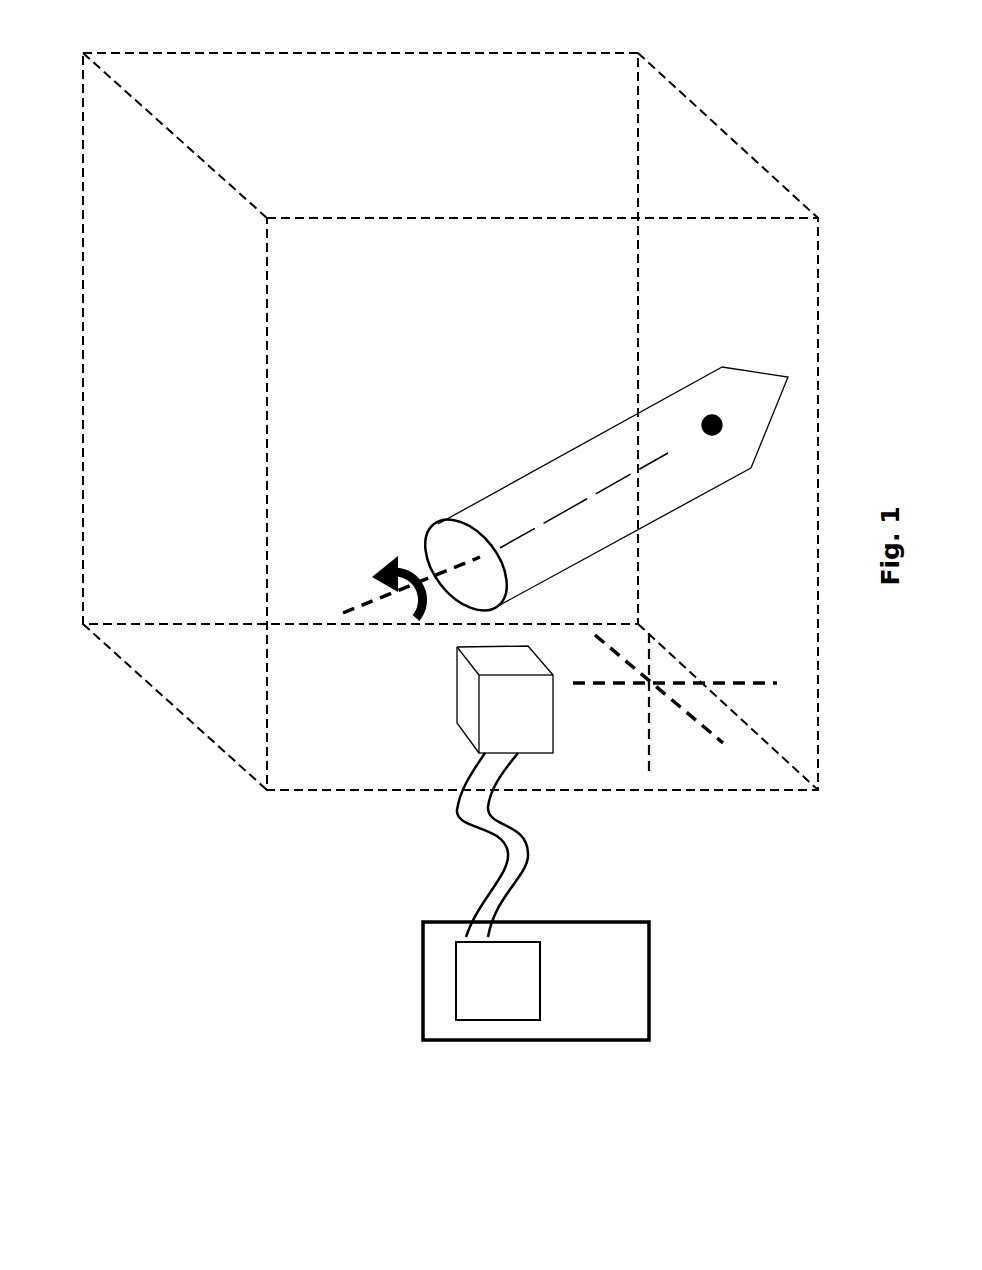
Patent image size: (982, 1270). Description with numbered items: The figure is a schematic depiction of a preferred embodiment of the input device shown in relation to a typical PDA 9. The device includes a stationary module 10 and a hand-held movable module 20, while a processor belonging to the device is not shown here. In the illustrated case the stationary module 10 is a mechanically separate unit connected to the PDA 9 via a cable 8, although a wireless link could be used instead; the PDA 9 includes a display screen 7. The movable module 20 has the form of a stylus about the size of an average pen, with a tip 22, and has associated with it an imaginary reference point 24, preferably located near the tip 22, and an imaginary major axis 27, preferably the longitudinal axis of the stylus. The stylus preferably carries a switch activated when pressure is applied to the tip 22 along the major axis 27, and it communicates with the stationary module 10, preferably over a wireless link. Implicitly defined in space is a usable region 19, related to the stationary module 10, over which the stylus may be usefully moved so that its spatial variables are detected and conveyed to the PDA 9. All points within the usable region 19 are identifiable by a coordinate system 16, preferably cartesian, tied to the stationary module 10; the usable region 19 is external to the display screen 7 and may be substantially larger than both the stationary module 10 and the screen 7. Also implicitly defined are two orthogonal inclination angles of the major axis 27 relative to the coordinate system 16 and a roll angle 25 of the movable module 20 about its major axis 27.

The display screen 7 is at (490, 1020).
The cable 8 is at (530, 840).
The PDA 9 is at (423, 963).
The stationary module 10 is at (457, 705).
The coordinate system 16 is at (650, 712).
The usable region 19 is at (83, 155).
The movable module 20 is at (597, 437).
The tip 22 is at (722, 367).
The reference point 24 is at (702, 425).
The roll angle 25 is at (398, 568).
The major axis 27 is at (345, 612).